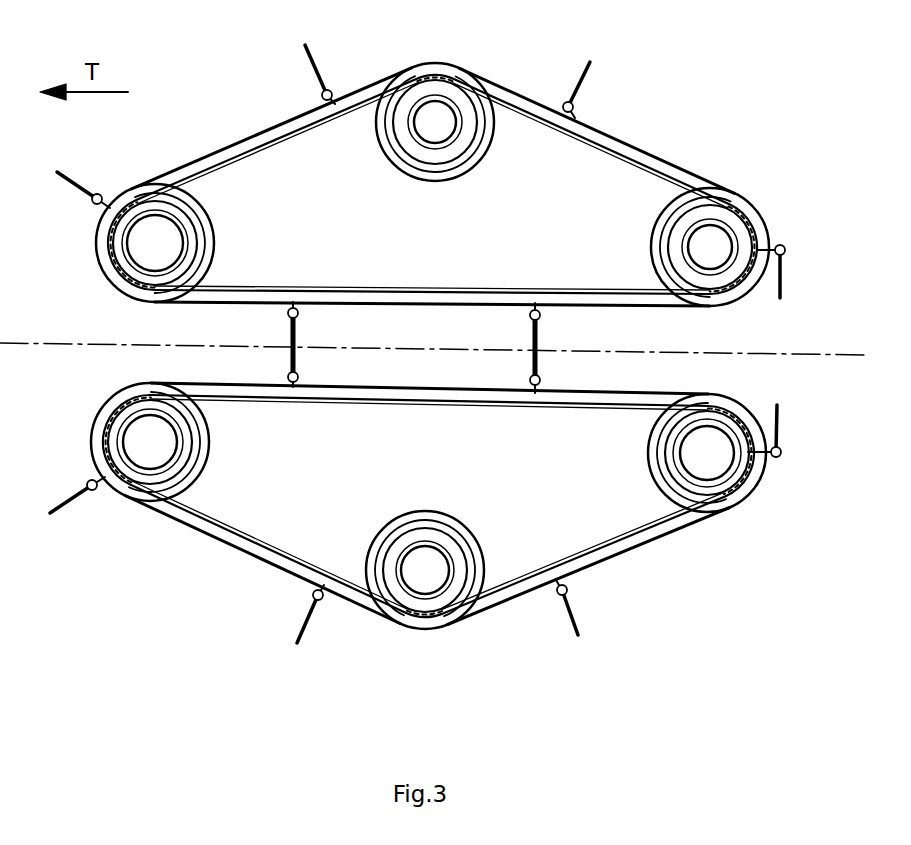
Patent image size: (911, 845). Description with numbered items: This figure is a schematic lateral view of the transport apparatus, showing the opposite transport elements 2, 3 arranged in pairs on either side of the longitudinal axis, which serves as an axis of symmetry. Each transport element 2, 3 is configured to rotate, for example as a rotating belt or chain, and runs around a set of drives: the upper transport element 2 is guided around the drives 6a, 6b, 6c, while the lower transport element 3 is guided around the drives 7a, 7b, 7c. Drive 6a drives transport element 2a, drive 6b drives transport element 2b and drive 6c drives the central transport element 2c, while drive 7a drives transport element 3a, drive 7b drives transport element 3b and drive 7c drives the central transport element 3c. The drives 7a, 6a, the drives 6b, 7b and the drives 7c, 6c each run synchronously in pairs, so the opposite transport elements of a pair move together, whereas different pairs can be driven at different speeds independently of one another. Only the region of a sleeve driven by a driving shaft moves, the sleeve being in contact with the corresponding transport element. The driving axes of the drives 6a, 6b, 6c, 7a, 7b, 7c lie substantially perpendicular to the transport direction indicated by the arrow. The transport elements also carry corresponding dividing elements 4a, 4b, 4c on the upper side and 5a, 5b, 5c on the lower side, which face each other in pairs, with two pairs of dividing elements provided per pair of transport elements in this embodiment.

The transport element 2 is at (650, 132).
The transport element 3 is at (645, 568).
The dividing element 4a is at (585, 73).
The dividing element 4b is at (78, 186).
The dividing element 4c is at (317, 63).
The dividing element 5a is at (572, 630).
The dividing element 5b is at (70, 503).
The dividing element 5c is at (303, 632).
The drive 6a is at (718, 240).
The drive 6b is at (435, 112).
The drive 6c is at (147, 245).
The drive 7a is at (715, 462).
The drive 7b is at (425, 580).
The drive 7c is at (142, 442).